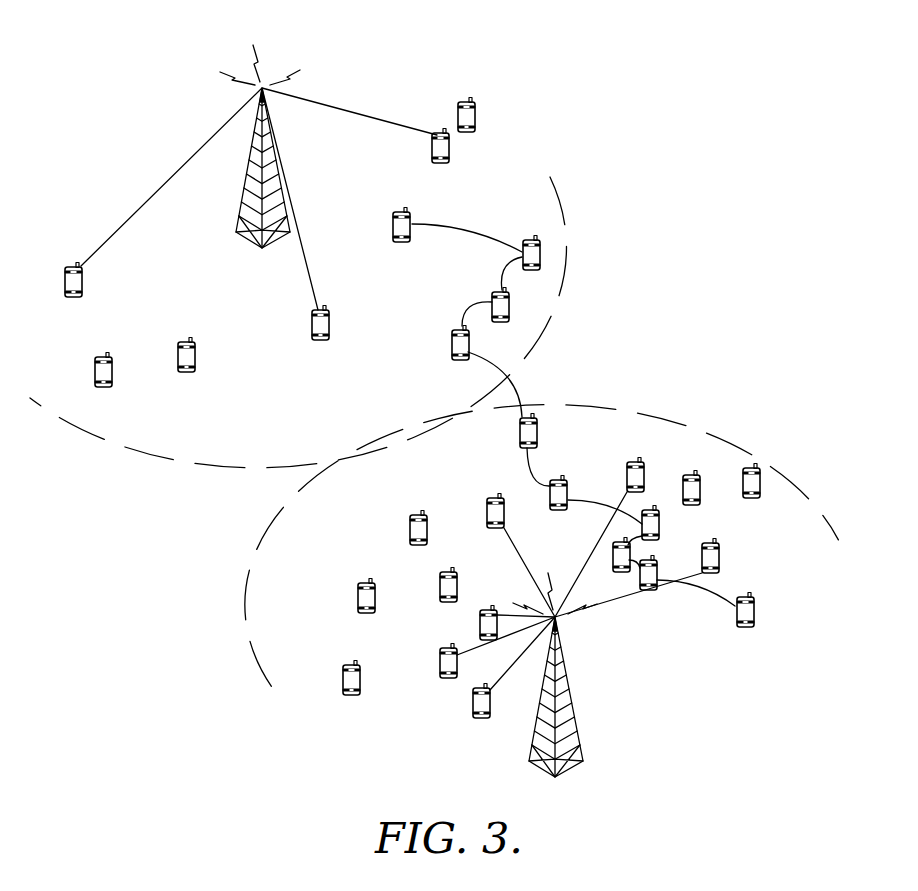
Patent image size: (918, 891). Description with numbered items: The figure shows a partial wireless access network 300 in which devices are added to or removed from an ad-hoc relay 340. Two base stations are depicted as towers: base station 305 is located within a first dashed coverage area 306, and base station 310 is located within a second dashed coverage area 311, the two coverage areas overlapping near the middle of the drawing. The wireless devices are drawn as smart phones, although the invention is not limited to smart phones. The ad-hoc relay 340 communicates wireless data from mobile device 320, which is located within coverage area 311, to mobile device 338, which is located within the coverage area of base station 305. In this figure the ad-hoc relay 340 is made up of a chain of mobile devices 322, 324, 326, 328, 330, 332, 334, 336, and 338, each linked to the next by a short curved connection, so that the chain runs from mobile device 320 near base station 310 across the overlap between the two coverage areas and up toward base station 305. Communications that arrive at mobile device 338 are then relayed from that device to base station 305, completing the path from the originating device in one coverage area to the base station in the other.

The partial wireless access network 300 is at (108, 63).
The base station 305 is at (240, 200).
The coverage area 306 is at (298, 322).
The base station 310 is at (572, 690).
The coverage area 311 is at (542, 546).
The mobile device 320 is at (754, 612).
The mobile device 322 is at (675, 561).
The mobile device 324 is at (613, 572).
The mobile device 326 is at (659, 524).
The mobile device 328 is at (558, 510).
The mobile device 330 is at (537, 434).
The mobile device 332 is at (452, 350).
The mobile device 334 is at (531, 299).
The mobile device 336 is at (531, 239).
The mobile device 338 is at (395, 235).
The ad-hoc relay 340 is at (516, 392).